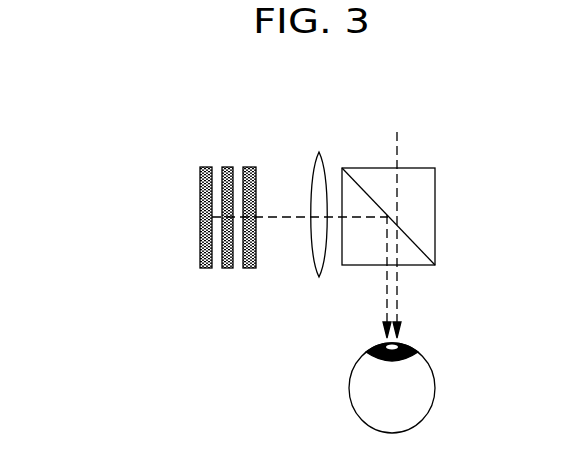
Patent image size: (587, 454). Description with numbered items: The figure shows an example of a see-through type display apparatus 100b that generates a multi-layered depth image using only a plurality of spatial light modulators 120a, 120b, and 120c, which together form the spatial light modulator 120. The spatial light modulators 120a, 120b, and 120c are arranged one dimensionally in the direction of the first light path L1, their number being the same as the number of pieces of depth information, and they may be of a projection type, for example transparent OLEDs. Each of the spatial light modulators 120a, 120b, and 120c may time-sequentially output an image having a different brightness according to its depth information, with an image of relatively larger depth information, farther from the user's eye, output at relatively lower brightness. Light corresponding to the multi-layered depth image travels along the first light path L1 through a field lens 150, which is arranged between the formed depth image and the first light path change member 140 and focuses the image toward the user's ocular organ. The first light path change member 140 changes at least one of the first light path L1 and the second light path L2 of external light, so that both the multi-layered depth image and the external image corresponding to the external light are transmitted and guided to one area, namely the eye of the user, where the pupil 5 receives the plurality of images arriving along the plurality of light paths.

The see-through type display apparatus 100b is at (103, 82).
The spatial light modulator 120 is at (224, 267).
The spatial light modulator 120a is at (203, 268).
The spatial light modulator 120b is at (228, 268).
The spatial light modulator 120c is at (273, 243).
The field lens 150 is at (318, 152).
The first light path change member 140 is at (370, 168).
The first light path L1 is at (387, 296).
The second light path L2 is at (397, 286).
The pupil 5 is at (436, 388).